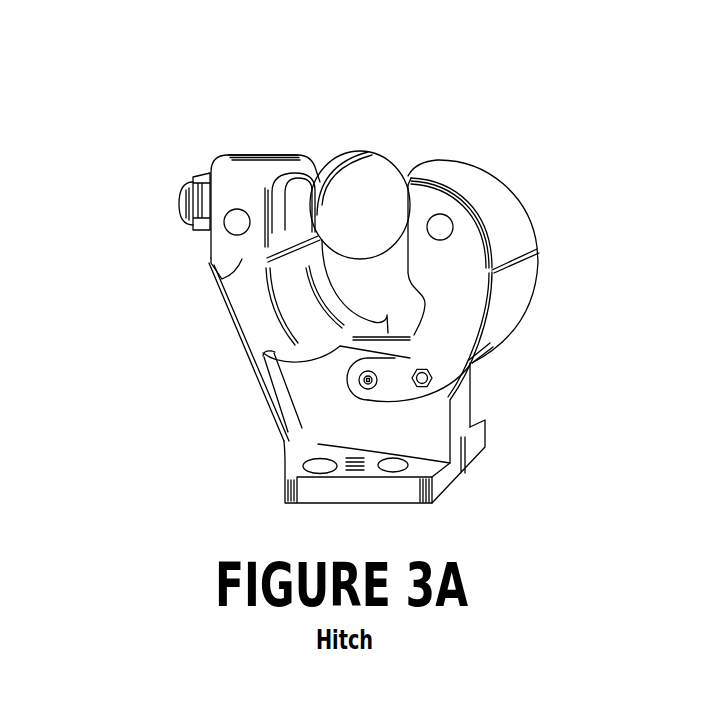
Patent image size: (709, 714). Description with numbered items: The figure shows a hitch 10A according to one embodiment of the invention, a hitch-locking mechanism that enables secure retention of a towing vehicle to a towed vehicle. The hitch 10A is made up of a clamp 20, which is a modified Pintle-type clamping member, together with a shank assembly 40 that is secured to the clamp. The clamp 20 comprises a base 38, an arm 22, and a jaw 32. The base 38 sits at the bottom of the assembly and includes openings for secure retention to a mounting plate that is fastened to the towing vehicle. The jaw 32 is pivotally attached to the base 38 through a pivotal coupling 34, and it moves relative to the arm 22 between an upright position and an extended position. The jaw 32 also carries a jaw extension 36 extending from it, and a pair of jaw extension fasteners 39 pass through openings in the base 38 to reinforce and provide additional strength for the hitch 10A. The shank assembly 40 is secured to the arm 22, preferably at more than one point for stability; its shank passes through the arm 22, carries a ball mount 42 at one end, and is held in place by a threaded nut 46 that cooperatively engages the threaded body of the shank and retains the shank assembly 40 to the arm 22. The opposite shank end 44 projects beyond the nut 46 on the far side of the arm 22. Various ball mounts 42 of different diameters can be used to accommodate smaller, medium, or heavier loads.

The hitch 10A is at (183, 259).
The shank assembly 40 is at (337, 131).
The threaded nut 46 is at (205, 172).
The shank end 44 is at (184, 189).
The arm 22 is at (242, 257).
The ball mount 42 is at (388, 170).
The jaw 32 is at (488, 274).
The clamp 20 is at (476, 486).
The jaw extension 36 is at (378, 390).
The jaw extension fastener 39 is at (362, 399).
The pivotal coupling 34 is at (433, 383).
The base 38 is at (295, 470).